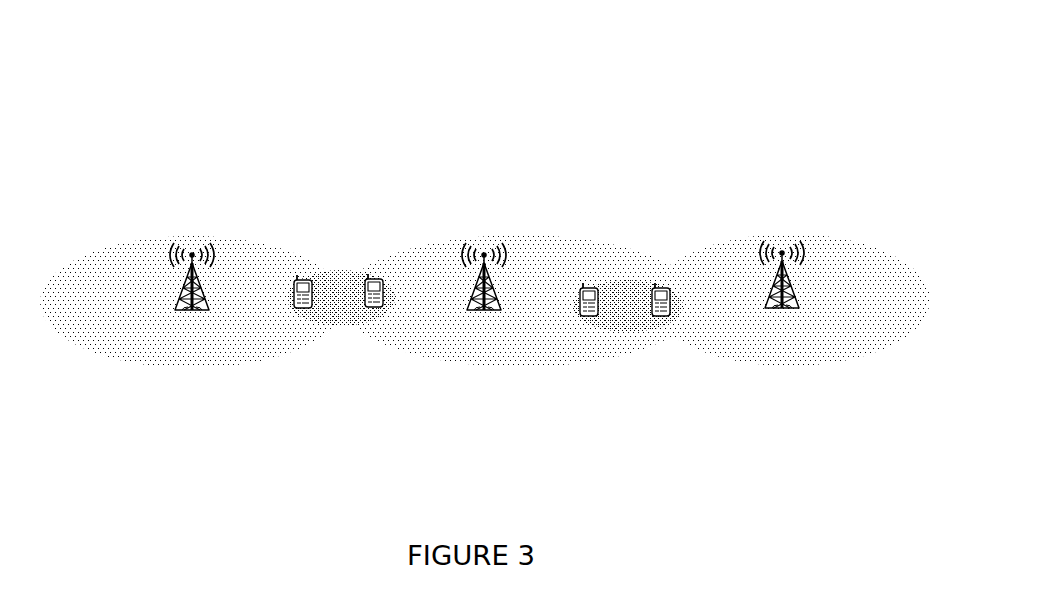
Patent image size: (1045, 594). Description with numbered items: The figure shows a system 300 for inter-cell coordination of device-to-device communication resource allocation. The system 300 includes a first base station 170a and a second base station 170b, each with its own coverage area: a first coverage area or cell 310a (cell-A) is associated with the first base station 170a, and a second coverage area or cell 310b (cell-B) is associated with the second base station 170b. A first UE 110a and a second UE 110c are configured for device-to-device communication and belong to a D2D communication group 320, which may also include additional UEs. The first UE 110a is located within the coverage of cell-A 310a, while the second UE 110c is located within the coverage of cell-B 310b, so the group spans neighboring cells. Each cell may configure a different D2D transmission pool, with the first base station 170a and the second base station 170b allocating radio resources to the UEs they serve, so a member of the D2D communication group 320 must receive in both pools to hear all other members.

The system 300 is at (673, 62).
The first base station 170a is at (192, 242).
The second base station 170b is at (487, 243).
The first UE 110a is at (299, 272).
The second UE 110c is at (375, 274).
The first coverage area or cell 310a is at (137, 360).
The second coverage area or cell 310b is at (530, 358).
The D2D communication group 320 is at (338, 330).